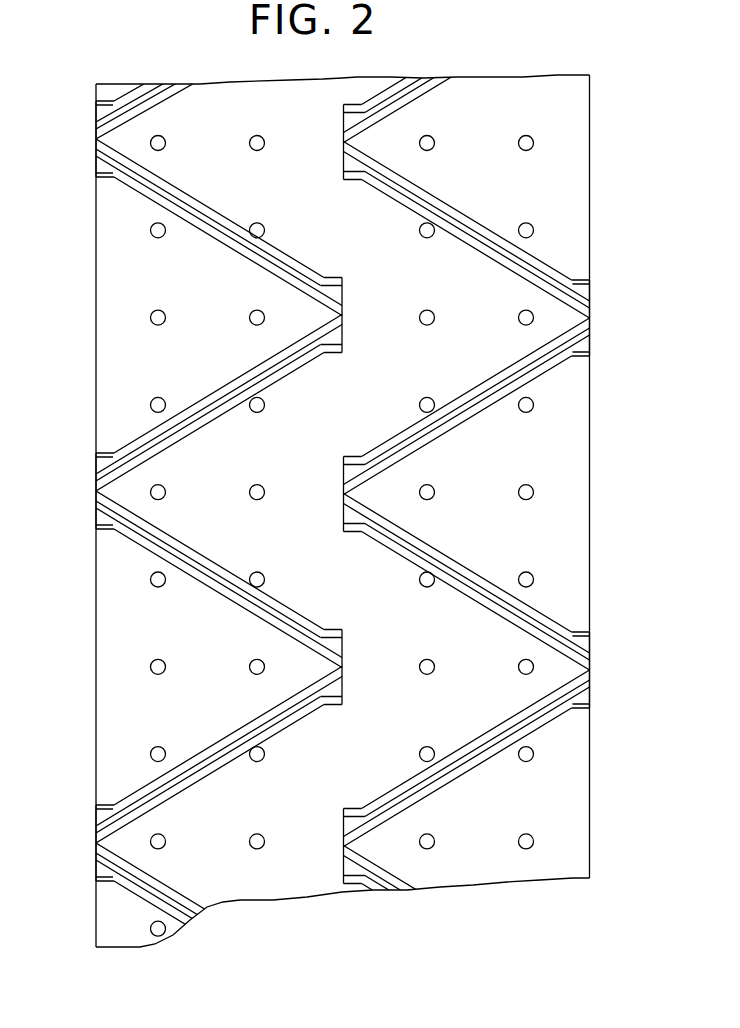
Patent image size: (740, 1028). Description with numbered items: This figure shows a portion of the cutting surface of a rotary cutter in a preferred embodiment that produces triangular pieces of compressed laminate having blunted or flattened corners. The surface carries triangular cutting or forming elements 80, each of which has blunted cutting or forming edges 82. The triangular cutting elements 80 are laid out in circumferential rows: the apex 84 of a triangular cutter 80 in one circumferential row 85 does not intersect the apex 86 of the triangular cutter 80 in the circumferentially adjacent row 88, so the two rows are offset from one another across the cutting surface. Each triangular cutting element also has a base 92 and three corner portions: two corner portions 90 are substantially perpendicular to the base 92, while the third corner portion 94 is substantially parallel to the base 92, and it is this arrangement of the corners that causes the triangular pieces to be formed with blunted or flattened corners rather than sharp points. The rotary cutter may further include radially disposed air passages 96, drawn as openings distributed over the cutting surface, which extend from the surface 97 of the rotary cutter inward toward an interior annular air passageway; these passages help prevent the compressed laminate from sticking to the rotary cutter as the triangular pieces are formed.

The cutting or forming element 80 is at (100, 104).
The blunted cutting or forming edge 82 is at (141, 88).
The apex 84 is at (343, 316).
The circumferential row 85 is at (230, 112).
The apex 86 is at (341, 143).
The circumferential adjacent row 88 is at (492, 105).
The corner portion 90 is at (96, 140).
The base 92 is at (96, 248).
The corner portion 94 is at (340, 150).
The air passage 96 is at (152, 586).
The surface 97 is at (590, 814).